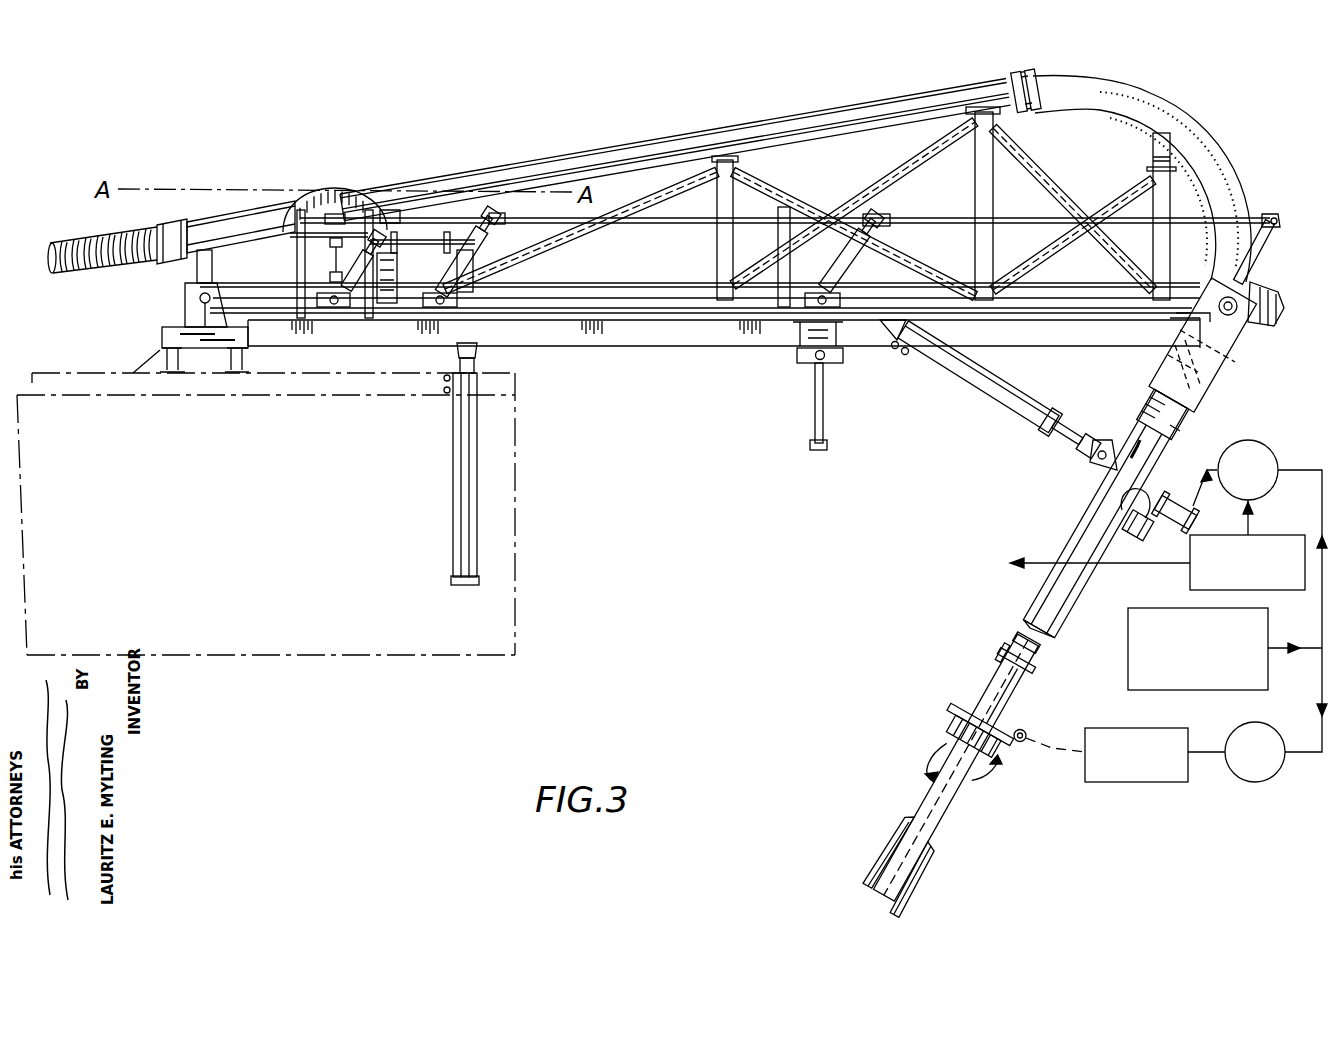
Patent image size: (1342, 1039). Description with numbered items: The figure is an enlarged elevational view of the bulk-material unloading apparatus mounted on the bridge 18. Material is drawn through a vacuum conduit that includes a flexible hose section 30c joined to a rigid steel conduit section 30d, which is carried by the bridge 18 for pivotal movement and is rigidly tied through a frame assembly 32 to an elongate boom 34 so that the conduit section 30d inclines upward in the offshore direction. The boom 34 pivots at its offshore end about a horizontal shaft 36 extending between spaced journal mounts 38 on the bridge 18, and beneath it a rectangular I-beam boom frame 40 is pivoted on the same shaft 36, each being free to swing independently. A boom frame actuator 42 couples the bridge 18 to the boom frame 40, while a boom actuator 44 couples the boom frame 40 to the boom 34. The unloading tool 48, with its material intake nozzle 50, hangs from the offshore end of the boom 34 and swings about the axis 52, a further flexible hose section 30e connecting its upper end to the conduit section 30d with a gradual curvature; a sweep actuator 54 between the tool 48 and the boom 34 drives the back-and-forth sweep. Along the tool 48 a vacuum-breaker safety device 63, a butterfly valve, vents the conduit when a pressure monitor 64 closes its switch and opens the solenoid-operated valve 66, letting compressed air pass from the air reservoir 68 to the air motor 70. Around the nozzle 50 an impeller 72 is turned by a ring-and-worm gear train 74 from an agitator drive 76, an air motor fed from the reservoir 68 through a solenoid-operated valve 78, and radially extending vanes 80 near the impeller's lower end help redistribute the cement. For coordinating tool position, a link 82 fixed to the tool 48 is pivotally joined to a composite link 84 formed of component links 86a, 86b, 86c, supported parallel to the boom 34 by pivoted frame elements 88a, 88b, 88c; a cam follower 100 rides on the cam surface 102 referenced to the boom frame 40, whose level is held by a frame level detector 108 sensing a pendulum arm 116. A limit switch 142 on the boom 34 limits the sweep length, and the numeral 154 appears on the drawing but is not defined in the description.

The bridge 18 is at (258, 655).
The flexible hose section 30c is at (100, 270).
The steel conduit section 30d is at (556, 148).
The flexible hose section 30e is at (1185, 126).
The frame assembly 32 is at (738, 194).
The boom 34 is at (622, 292).
The horizontal shaft 36 is at (200, 298).
The journal mounts 38 is at (186, 314).
The boom frame 40 is at (614, 340).
The boom frame actuator 42 is at (462, 470).
The boom actuator 44 is at (812, 408).
The unloading tool 48 is at (1024, 614).
The material intake nozzle 50 is at (996, 690).
The axis 52 is at (1238, 338).
The sweep actuator 54 is at (1012, 404).
The vacuum-breaker safety device 63 is at (1147, 524).
The pressure monitor 64 is at (1192, 578).
The solenoid-operated valve 66 is at (1270, 450).
The air reservoir 68 is at (1128, 664).
The air motor 70 is at (1176, 496).
The impeller 72 is at (952, 752).
The ring-and-worm gear train 74 is at (1012, 750).
The agitator drive 76 is at (1110, 784).
The solenoid-operated valve 78 is at (1240, 783).
The radially extending vanes 80 is at (890, 898).
The link 82 is at (1262, 248).
The composite link 84 is at (760, 212).
The component link 86a is at (957, 223).
The component link 86b is at (588, 222).
The component link 86c is at (430, 216).
The frame element 88a is at (852, 258).
The frame element 88b is at (486, 258).
The frame element 88c is at (364, 258).
The cam follower 100 is at (390, 212).
The cam surface 102 is at (310, 196).
The frame level detector 108 is at (272, 226).
The pendulum arm 116 is at (312, 284).
The limit switch 142 is at (394, 306).
The adjusting rod 154 is at (422, 256).